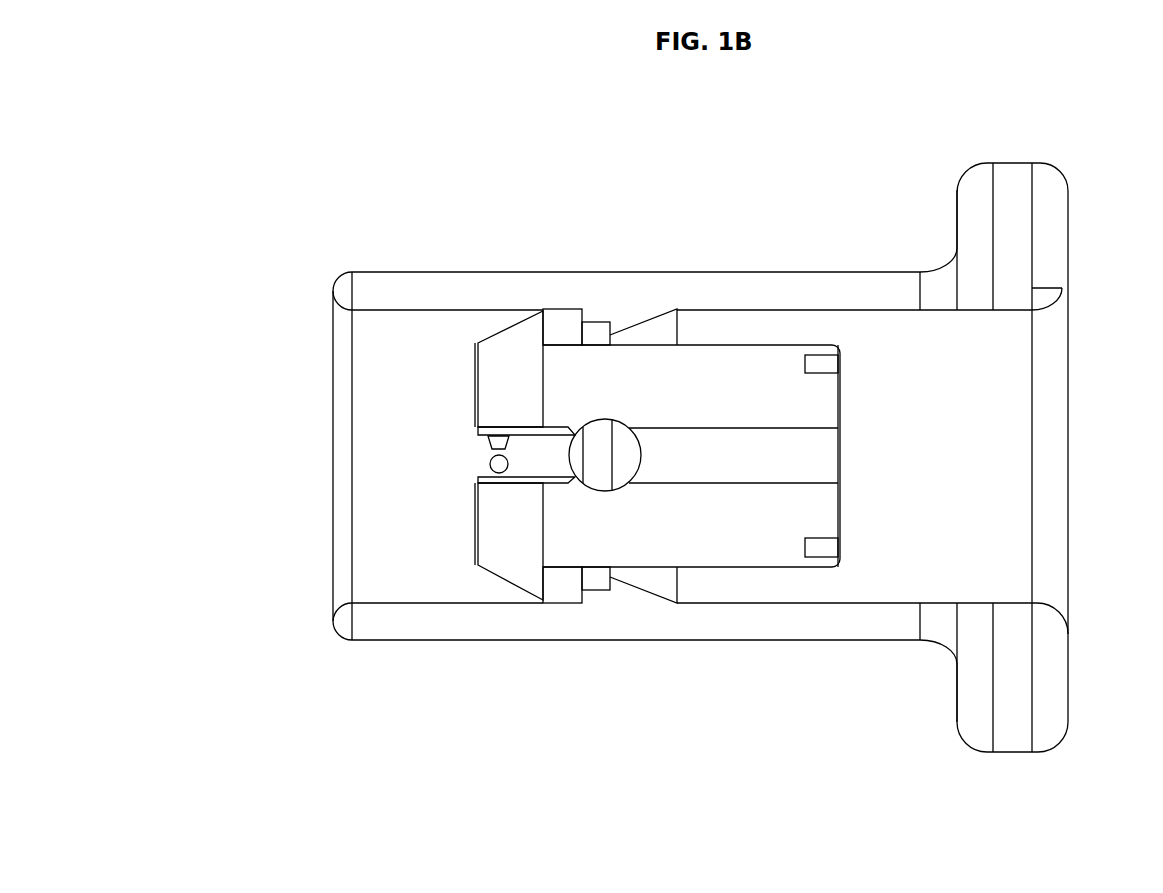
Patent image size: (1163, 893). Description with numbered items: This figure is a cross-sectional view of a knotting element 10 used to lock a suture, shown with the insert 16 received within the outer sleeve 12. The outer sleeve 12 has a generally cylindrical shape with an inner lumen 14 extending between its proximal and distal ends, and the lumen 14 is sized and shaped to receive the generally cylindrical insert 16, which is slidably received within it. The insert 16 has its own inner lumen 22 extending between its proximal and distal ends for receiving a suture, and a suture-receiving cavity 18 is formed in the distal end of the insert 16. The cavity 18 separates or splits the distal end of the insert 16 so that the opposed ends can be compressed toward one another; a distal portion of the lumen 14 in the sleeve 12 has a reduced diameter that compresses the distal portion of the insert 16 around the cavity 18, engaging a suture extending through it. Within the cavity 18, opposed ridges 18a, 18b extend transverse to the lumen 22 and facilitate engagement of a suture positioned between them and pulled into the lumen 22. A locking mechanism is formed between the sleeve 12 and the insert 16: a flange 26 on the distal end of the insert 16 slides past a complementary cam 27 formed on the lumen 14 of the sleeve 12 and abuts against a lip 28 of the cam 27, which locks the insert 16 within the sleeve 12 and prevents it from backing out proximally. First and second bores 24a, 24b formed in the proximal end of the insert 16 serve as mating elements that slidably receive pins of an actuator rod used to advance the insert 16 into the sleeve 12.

The knotting element 10 is at (370, 173).
The outer sleeve 12 is at (993, 790).
The inner lumen 14 is at (970, 488).
The insert 16 is at (682, 365).
The suture-receiving cavity 18 is at (540, 450).
The ridge 18a is at (487, 447).
The ridge 18b is at (488, 470).
The inner lumen 22 is at (755, 452).
The first bore 24a is at (826, 362).
The second bore 24b is at (827, 557).
The flange 26 is at (503, 540).
The cam 27 is at (646, 577).
The lip 28 is at (593, 578).